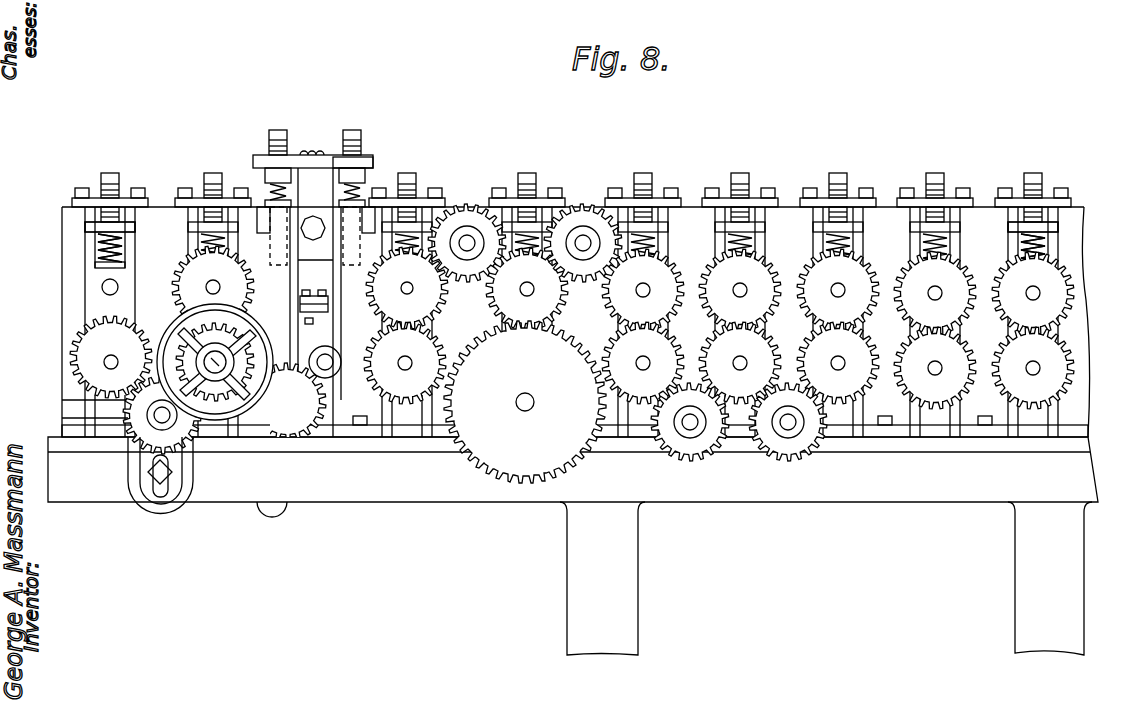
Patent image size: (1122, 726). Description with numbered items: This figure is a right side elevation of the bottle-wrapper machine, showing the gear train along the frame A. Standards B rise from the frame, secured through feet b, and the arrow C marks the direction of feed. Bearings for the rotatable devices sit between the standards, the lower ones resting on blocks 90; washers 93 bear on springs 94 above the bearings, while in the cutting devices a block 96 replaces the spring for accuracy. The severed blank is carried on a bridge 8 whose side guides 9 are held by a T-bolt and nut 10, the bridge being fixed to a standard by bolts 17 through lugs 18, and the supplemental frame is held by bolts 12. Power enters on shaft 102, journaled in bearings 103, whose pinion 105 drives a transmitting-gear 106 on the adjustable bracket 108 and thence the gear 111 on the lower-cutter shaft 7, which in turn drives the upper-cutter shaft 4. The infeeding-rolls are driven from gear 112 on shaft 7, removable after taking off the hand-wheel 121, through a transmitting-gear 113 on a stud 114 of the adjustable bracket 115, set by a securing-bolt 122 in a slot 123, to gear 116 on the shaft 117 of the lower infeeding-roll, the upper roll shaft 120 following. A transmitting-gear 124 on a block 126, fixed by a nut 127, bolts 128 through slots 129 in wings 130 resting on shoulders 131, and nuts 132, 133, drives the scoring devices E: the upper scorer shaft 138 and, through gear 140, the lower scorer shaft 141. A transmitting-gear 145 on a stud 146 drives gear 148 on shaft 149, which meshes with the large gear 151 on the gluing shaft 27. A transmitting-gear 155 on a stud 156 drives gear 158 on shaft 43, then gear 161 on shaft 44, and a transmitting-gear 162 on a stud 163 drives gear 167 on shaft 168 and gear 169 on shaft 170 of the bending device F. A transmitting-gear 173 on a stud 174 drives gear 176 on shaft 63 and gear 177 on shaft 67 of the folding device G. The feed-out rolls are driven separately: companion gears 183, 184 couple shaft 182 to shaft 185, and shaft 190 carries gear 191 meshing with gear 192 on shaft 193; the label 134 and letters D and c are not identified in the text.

The upper-cutter shaft 4 is at (205, 287).
The lower-cutter shaft 7 is at (246, 345).
The bridge 8 is at (306, 335).
The side guides 9 is at (304, 289).
The T-bolt and nut 10 is at (324, 337).
The bolts 12 is at (340, 430).
The bolts 17 is at (319, 296).
The lugs 18 is at (330, 302).
The shaft 27 is at (534, 402).
The shaft 43 is at (643, 297).
The shaft 44 is at (639, 368).
The shaft 63 is at (841, 367).
The shaft 67 is at (838, 297).
The blocks 90 is at (103, 416).
The washers 93 is at (135, 227).
The springs 94 is at (100, 241).
The block 96 is at (228, 243).
The shaft 102 is at (333, 360).
The bearings 103 is at (333, 378).
The pinion 105 is at (325, 440).
The transmitting-gear 106 is at (298, 440).
The adjustable bracket 108 is at (273, 513).
The gear 111 is at (186, 255).
The gear 112 is at (180, 345).
The transmitting-gear 113 is at (150, 413).
The stud 114 is at (162, 423).
The adjustable bracket 115 is at (168, 507).
The gear 116 is at (196, 476).
The shaft 117 is at (113, 368).
The shaft 120 is at (102, 288).
The hand-wheel 121 is at (266, 459).
The securing-bolt 122 is at (150, 472).
The slot 123 is at (155, 492).
The transmitting-gear 124 is at (372, 186).
The block 126 is at (315, 302).
The nut 127 is at (318, 240).
The bolts 128 is at (288, 132).
The slots 129 is at (300, 156).
The wings 130 is at (257, 147).
The shoulders 131 is at (292, 178).
The nuts 132 is at (275, 135).
The nuts 133 is at (320, 220).
The plate 134 is at (380, 307).
The shaft 138 is at (407, 283).
The gear 140 is at (438, 359).
The shaft 141 is at (405, 356).
The transmitting-gear 145 is at (474, 200).
The stud 146 is at (467, 252).
The gear 148 is at (563, 302).
The shaft 149 is at (527, 296).
The gear 151 is at (490, 468).
The transmitting-gear 155 is at (580, 212).
The stud 156 is at (583, 252).
The gear 158 is at (672, 275).
The gear 161 is at (668, 305).
The transmitting-gear 162 is at (693, 456).
The stud 163 is at (690, 414).
The gear 167 is at (666, 357).
The shaft 168 is at (740, 370).
The gear 169 is at (762, 262).
The shaft 170 is at (740, 284).
The transmitting-gear 173 is at (786, 456).
The stud 174 is at (788, 414).
The gear 176 is at (836, 409).
The gear 177 is at (797, 276).
The shaft 182 is at (935, 375).
The companion gear 183 is at (912, 380).
The companion gear 184 is at (912, 272).
The shaft 185 is at (935, 288).
The shaft 190 is at (1033, 362).
The gear 191 is at (1030, 406).
The gear 192 is at (1067, 273).
The shaft 193 is at (1033, 288).
The frame A is at (258, 447).
The standards B is at (151, 207).
The arrow C is at (62, 322).
The bracket assembly D is at (298, 206).
The creasing or scoring devices E is at (424, 178).
The bending device F is at (760, 183).
The folding device G is at (855, 183).
The feet b is at (968, 439).
The hub c is at (200, 237).